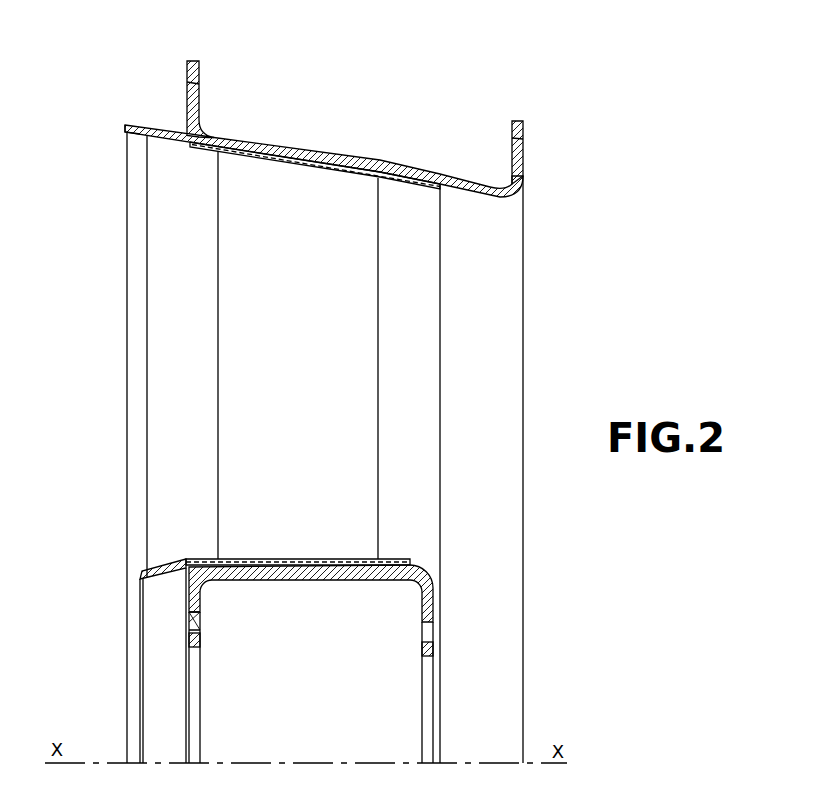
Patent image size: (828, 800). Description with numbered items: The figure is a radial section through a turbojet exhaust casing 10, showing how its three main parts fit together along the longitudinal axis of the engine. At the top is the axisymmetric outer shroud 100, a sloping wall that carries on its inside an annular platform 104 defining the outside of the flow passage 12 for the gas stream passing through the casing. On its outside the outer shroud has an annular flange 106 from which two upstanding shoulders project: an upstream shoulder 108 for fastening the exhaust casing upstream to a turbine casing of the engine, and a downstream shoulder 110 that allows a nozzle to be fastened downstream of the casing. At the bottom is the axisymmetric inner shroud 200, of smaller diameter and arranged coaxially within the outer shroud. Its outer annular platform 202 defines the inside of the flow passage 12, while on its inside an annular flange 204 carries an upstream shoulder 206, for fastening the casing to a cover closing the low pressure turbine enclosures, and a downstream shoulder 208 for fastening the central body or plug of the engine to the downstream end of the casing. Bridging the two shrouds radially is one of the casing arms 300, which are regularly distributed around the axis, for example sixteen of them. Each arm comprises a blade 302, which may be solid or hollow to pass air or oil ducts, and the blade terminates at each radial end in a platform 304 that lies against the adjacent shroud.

The exhaust casing 10 is at (582, 226).
The flow passage 12 is at (160, 221).
The outer shroud 100 is at (404, 158).
The annular platform 104 is at (155, 126).
The annular flange 106 is at (300, 139).
The upstream shoulder 108 is at (192, 72).
The downstream shoulder 110 is at (523, 123).
The inner shroud 200 is at (338, 590).
The annular platform 202 is at (182, 559).
The annular flange 204 is at (312, 581).
The upstream shoulder 206 is at (194, 644).
The downstream shoulder 208 is at (424, 647).
The casing arm 300 is at (265, 318).
The blade 302 is at (340, 352).
The platform 304 is at (345, 181).